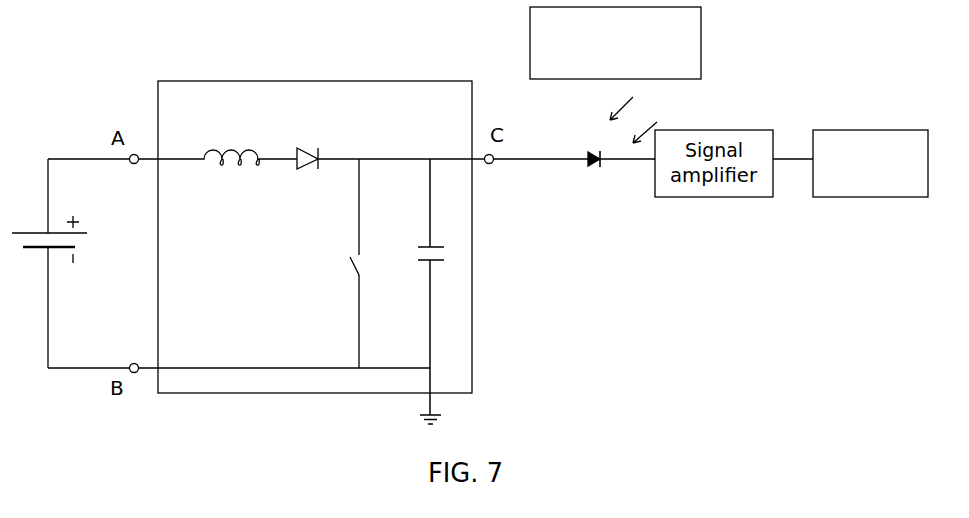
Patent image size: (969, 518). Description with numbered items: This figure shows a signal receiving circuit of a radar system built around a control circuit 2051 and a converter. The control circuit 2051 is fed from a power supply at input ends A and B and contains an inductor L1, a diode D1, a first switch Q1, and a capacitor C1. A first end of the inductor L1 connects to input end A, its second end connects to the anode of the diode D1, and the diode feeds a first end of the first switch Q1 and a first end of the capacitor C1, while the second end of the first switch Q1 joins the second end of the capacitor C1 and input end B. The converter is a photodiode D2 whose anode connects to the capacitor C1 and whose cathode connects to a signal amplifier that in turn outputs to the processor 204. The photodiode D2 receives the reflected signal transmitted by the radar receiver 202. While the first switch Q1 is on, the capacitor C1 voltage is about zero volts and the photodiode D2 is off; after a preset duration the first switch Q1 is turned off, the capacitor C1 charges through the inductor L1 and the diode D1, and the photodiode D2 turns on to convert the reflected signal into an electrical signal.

The control circuit 2051 is at (321, 252).
The radar receiver 202 is at (615, 75).
The processor 204 is at (870, 163).
The inductor L1 is at (231, 178).
The diode D1 is at (375, 175).
The first switch Q1 is at (336, 263).
The capacitor C1 is at (415, 291).
The photodiode D2 is at (575, 174).